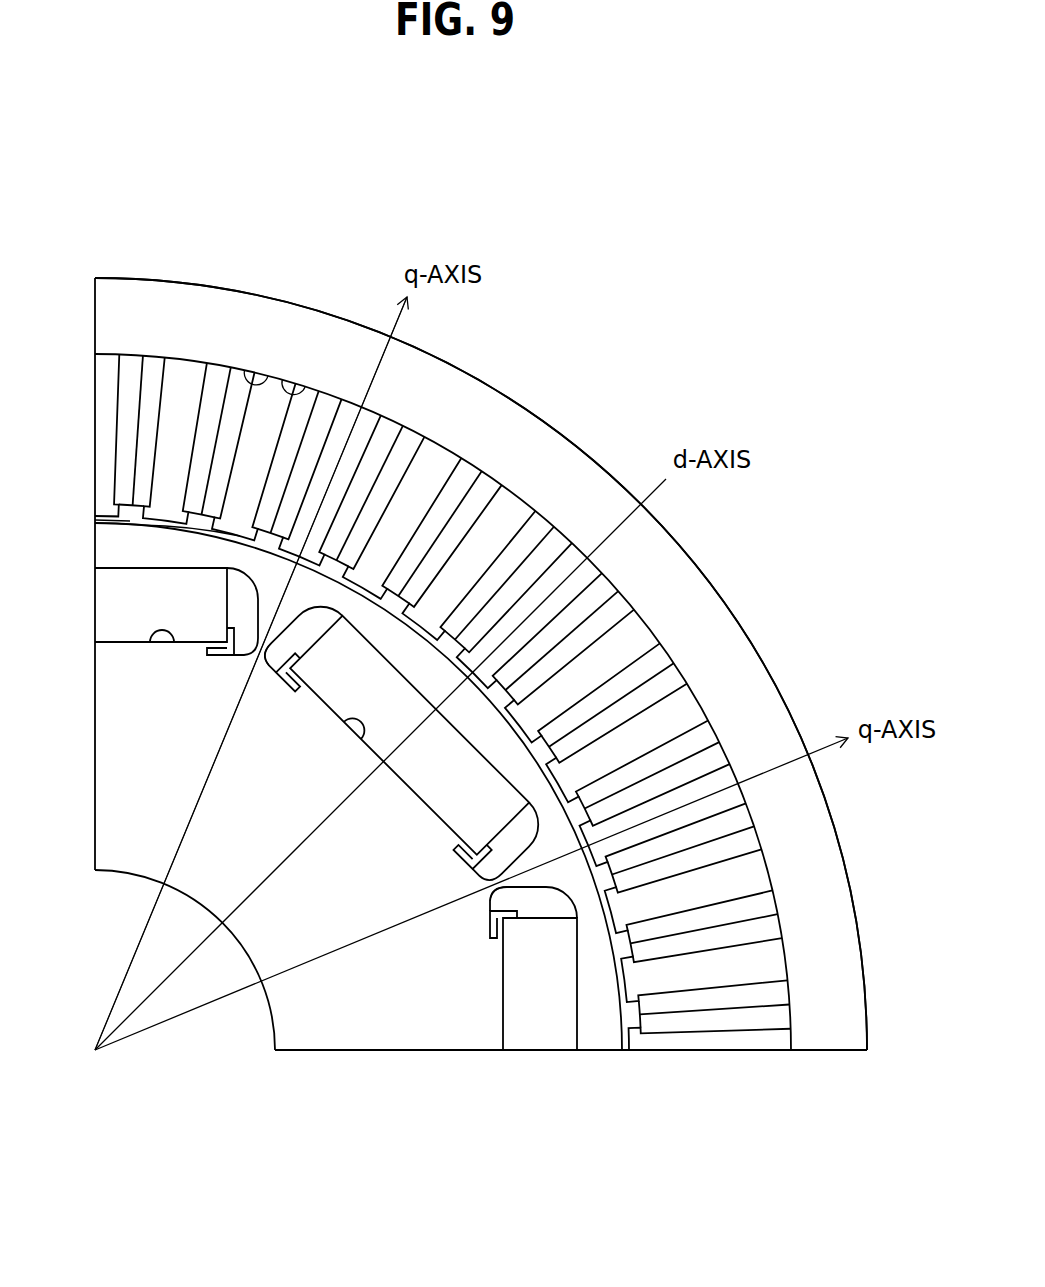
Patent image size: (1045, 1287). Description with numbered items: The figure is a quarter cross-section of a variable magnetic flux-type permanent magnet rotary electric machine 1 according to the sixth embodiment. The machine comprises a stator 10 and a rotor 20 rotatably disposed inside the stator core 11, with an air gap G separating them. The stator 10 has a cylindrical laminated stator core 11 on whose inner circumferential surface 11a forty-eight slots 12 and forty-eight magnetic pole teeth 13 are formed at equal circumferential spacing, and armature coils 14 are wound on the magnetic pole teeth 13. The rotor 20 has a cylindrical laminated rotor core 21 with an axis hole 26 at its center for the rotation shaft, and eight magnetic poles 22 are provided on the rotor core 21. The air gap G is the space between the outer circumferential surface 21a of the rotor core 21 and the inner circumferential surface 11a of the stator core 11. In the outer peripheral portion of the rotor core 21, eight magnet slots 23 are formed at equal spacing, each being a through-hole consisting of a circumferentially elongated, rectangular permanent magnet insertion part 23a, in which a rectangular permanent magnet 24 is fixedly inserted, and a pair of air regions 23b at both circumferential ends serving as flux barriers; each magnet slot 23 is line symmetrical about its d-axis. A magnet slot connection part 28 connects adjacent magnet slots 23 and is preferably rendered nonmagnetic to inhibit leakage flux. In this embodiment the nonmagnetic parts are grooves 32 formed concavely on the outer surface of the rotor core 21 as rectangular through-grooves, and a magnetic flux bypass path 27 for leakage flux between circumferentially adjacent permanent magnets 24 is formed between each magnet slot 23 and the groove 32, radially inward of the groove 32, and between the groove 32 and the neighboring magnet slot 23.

The variable magnetic flux-type permanent magnet rotary electric machine 1 is at (380, 250).
The stator 10 is at (130, 275).
The stator core 11 is at (845, 1018).
The inner circumferential surface of the stator core 11a is at (97, 517).
The slots 12 is at (290, 390).
The magnetic pole teeth 13 is at (627, 638).
The armature coils 14 is at (745, 930).
The rotor 20 is at (605, 1060).
The rotor core 21 is at (408, 1030).
The outer circumferential surface of the rotor core 21a is at (97, 524).
The magnetic poles 22 is at (170, 555).
The magnet slots 23 is at (152, 643).
The permanent magnet insertion part 23a is at (345, 716).
The air regions 23b is at (240, 605).
The permanent magnet 24 is at (128, 633).
The axis hole 26 is at (264, 1028).
The magnetic flux bypass path 27 is at (338, 598).
The magnet slot connection part 28 is at (250, 676).
The grooves 32 is at (414, 662).
The air gap G is at (130, 524).